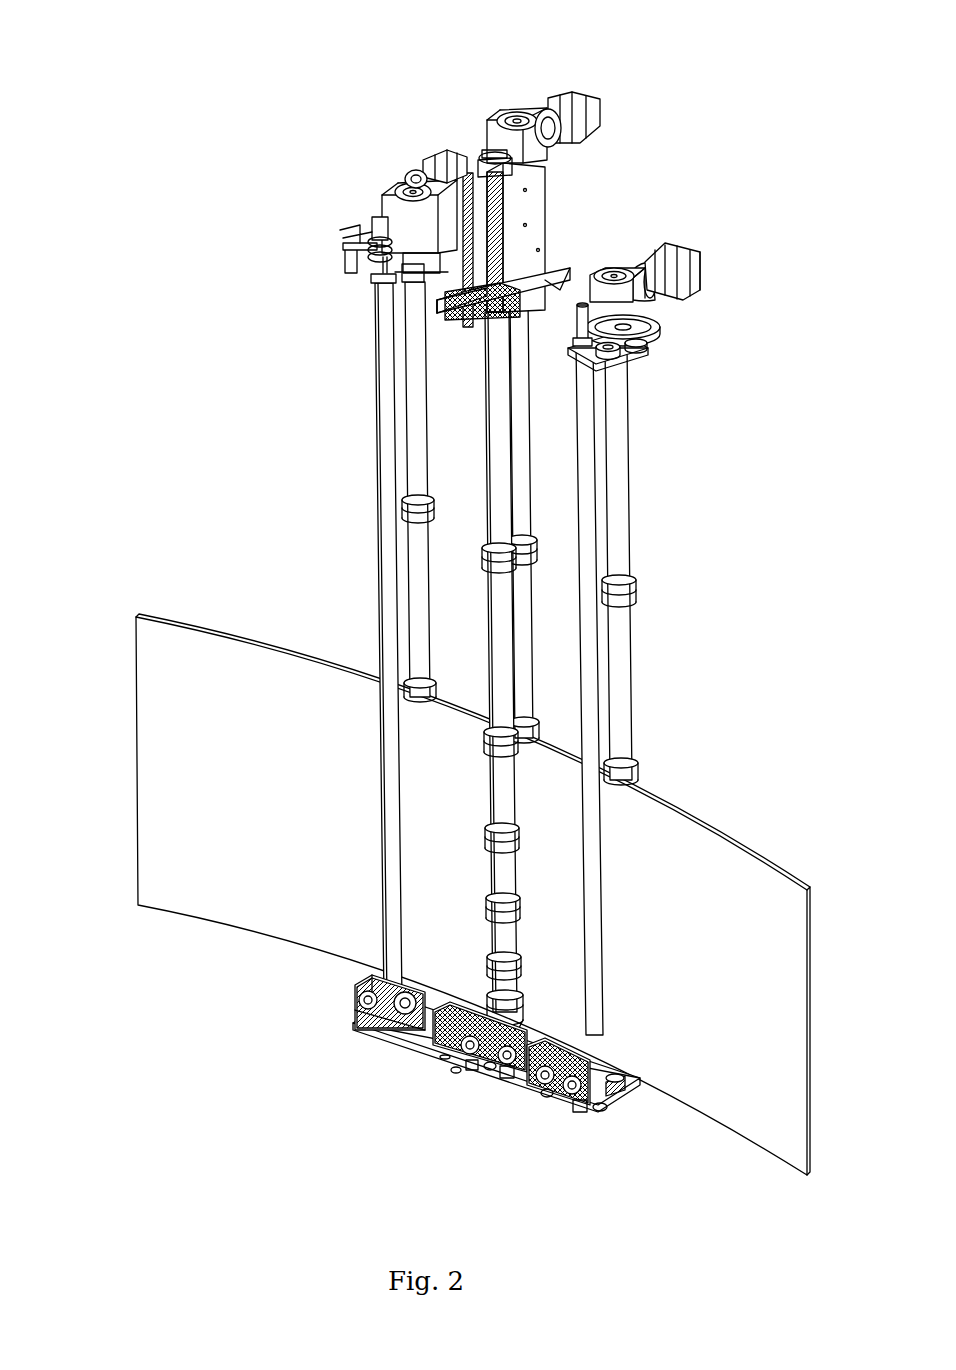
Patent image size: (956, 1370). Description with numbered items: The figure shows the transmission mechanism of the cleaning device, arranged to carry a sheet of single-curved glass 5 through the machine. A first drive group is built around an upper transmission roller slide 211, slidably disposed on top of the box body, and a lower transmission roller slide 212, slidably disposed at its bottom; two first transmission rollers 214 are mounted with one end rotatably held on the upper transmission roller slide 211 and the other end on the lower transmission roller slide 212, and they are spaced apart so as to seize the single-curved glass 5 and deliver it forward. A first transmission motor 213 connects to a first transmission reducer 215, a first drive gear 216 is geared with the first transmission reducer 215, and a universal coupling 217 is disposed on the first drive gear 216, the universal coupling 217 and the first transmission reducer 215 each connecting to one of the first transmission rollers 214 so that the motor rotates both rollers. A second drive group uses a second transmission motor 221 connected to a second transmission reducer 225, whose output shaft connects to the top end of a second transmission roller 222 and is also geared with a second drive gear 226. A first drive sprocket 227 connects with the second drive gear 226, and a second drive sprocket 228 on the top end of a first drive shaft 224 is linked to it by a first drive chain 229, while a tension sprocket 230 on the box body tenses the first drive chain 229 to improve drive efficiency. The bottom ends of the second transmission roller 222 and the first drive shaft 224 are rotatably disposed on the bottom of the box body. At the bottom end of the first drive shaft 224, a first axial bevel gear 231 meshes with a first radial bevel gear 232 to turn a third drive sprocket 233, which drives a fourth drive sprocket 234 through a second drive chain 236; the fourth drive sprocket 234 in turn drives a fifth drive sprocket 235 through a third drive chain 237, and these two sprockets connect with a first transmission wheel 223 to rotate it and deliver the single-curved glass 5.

The single-curved glass 5 is at (163, 795).
The upper transmission roller slide 211 is at (437, 310).
The lower transmission roller slide 212 is at (450, 1058).
The first transmission motor 213 is at (558, 95).
The first transmission rollers 214 is at (498, 617).
The first transmission reducer 215 is at (510, 113).
The first drive gear 216 is at (477, 157).
The universal coupling 217 is at (502, 230).
The second transmission motor 221 is at (673, 257).
The second transmission roller 222 is at (618, 565).
The first transmission wheel 223 is at (490, 1067).
The first drive shaft 224 is at (588, 665).
The second transmission reducer 225 is at (657, 300).
The second drive gear 226 is at (660, 325).
The first drive sprocket 227 is at (663, 340).
The second drive sprocket 228 is at (576, 345).
The first drive chain 229 is at (640, 345).
The tension sprocket 230 is at (640, 363).
The first axial bevel gear 231 is at (617, 1090).
The first radial bevel gear 232 is at (600, 1110).
The third drive sprocket 233 is at (580, 1110).
The fourth drive sprocket 234 is at (507, 1073).
The fifth drive sprocket 235 is at (457, 1072).
The second drive chain 236 is at (547, 1095).
The third drive chain 237 is at (473, 1067).